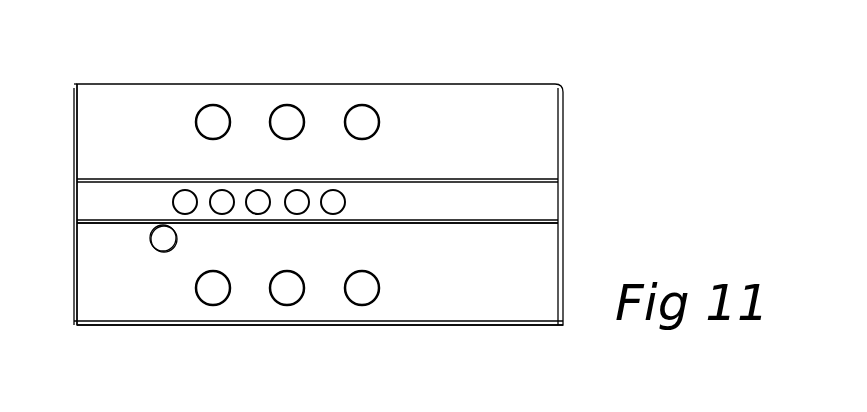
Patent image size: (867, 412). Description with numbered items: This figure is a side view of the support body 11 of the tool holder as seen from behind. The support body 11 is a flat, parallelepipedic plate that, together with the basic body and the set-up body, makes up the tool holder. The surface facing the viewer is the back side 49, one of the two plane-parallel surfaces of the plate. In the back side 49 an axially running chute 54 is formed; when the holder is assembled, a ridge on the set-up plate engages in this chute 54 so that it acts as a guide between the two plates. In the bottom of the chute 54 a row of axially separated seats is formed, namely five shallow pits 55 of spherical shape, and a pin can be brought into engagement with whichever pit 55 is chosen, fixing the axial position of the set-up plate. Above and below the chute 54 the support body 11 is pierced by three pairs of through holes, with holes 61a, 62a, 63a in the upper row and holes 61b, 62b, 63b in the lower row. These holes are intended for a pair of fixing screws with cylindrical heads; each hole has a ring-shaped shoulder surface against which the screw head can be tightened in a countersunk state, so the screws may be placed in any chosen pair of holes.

The support body 11 is at (575, 135).
The back side 49 is at (502, 283).
The chute 54 is at (462, 198).
The pits 55 is at (297, 203).
The through hole 61a is at (212, 116).
The through hole 62a is at (287, 118).
The through hole 63a is at (362, 118).
The through hole 61b is at (212, 295).
The through hole 62b is at (287, 295).
The through hole 63b is at (362, 295).